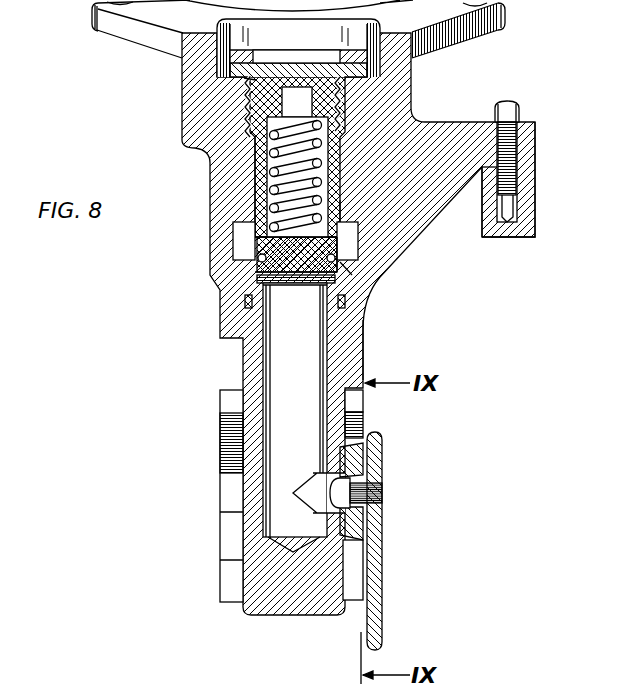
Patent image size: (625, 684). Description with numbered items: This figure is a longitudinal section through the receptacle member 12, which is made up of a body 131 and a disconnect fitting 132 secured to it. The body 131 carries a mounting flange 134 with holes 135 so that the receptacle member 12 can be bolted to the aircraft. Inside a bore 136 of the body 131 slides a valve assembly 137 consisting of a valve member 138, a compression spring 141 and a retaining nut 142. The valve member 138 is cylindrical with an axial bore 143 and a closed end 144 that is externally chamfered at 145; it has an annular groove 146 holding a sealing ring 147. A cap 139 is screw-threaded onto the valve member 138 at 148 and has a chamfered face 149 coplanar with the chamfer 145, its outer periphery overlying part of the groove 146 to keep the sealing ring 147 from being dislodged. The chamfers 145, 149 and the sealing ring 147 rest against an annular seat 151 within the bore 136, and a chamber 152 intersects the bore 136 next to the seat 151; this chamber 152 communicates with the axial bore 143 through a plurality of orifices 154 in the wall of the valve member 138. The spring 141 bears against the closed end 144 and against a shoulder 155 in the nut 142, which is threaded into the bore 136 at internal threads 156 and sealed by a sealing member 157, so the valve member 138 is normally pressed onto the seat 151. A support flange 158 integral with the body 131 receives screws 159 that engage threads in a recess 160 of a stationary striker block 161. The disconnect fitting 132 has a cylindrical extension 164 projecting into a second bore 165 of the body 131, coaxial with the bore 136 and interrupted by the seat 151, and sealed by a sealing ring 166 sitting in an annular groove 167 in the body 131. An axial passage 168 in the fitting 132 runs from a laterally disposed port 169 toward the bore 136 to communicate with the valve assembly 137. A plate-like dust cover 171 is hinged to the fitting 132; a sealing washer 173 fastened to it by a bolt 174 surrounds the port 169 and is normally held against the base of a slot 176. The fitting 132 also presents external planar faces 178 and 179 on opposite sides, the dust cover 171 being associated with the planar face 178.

The receptacle member 12 is at (138, 307).
The body 131 is at (182, 97).
The disconnect fitting 132 is at (221, 421).
The mounting flange 134 is at (115, 30).
The holes 135 is at (94, 13).
The bore 136 is at (257, 143).
The valve assembly 137 is at (258, 195).
The valve member 138 is at (260, 209).
The cap 139 is at (258, 293).
The compression spring 141 is at (272, 173).
The retaining nut 142 is at (257, 105).
The axial bore 143 is at (344, 211).
The closed end 144 is at (334, 262).
The chamfer 145 is at (341, 265).
The annular groove 146 is at (258, 257).
The sealing ring 147 is at (258, 279).
The threaded connection 148 is at (250, 243).
The chamfered face 149 is at (343, 270).
The annular seat 151 is at (333, 264).
The chamber 152 is at (336, 256).
The orifices 154 is at (351, 242).
The shoulder 155 is at (252, 133).
The internal threads 156 is at (247, 98).
The sealing member 157 is at (341, 80).
The support flange 158 is at (536, 140).
The screws 159 is at (523, 107).
The recess 160 is at (536, 186).
The stationary striker block 161 is at (536, 215).
The cylindrical extension 164 is at (262, 358).
The bore 165 is at (256, 319).
The sealing ring 166 is at (343, 301).
The annular groove 167 is at (365, 332).
The axial passage 168 is at (270, 372).
The port 169 is at (313, 473).
The dust cover 171 is at (383, 545).
The sealing washer 173 is at (383, 513).
The bolt 174 is at (385, 490).
The slot 176 is at (364, 423).
The planar face 178 is at (364, 405).
The planar face 179 is at (220, 500).